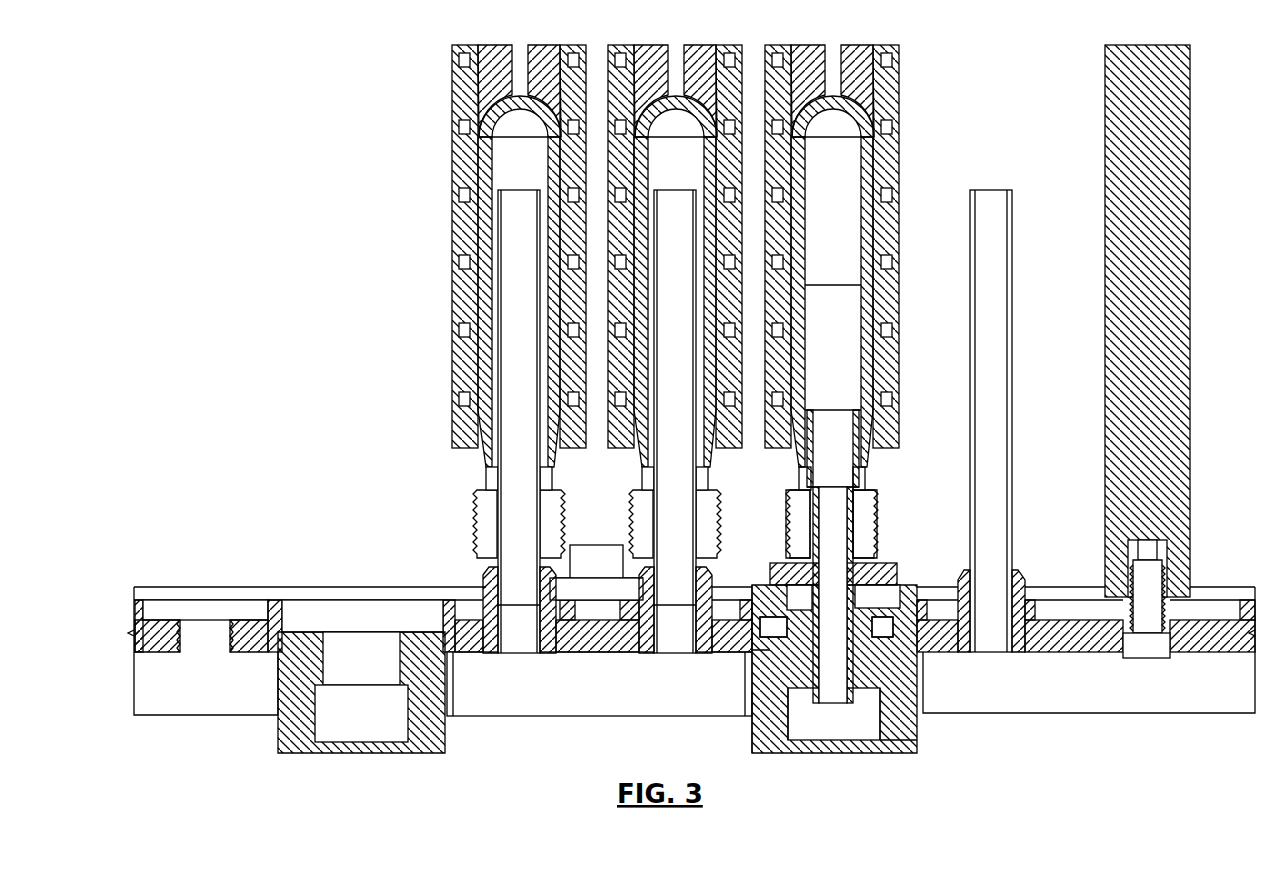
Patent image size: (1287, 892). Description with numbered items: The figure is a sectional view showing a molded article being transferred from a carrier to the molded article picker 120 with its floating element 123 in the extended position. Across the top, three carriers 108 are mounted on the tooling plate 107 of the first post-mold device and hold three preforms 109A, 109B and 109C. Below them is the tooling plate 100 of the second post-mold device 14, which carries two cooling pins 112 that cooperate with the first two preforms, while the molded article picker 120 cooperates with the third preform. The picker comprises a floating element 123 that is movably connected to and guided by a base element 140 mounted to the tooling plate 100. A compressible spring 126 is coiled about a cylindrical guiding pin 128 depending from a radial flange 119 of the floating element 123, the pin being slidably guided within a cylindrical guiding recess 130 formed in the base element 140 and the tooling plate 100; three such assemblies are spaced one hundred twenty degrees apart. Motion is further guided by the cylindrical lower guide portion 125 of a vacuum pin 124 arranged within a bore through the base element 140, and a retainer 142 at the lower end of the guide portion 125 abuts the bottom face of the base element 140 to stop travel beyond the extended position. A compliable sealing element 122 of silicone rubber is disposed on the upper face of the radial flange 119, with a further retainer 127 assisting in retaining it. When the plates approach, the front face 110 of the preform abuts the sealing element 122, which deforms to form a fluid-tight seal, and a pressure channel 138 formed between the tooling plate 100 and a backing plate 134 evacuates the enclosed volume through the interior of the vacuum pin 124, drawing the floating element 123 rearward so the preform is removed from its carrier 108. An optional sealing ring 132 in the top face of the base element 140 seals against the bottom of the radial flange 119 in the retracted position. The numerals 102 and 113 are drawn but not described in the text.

The second post-mold device 14 is at (380, 540).
The tooling plate 100 is at (465, 680).
The mounting block 102 is at (1108, 698).
The tooling plate 107 is at (835, 78).
The carrier 108 is at (918, 158).
The preform 109A is at (478, 310).
The preform 109B is at (643, 158).
The preform 109C is at (878, 290).
The front face of the preform 110 is at (906, 533).
The cooling pin 112 is at (500, 262).
The retaining nut 113 is at (490, 572).
The radial flange 119 is at (915, 588).
The molded article picker 120 is at (972, 507).
The compliable sealing element 122 is at (893, 577).
The floating element 123 is at (862, 532).
The vacuum pin 124 is at (862, 500).
The cylindrical lower guide portion 125 is at (877, 690).
The compressible spring 126 is at (780, 598).
The retainer 127 is at (805, 515).
The cylindrical guiding pin 128 is at (778, 650).
The cylindrical guiding recess 130 is at (752, 713).
The sealing ring 132 is at (1012, 632).
The backing plate 134 is at (900, 740).
The pressure channel 138 is at (848, 728).
The base element 140 is at (855, 672).
The retainer 142 is at (807, 697).